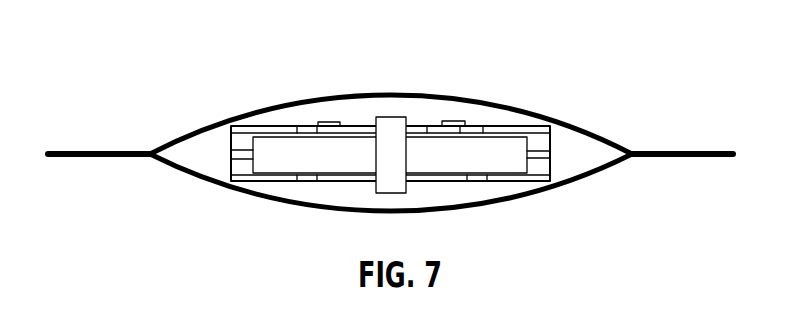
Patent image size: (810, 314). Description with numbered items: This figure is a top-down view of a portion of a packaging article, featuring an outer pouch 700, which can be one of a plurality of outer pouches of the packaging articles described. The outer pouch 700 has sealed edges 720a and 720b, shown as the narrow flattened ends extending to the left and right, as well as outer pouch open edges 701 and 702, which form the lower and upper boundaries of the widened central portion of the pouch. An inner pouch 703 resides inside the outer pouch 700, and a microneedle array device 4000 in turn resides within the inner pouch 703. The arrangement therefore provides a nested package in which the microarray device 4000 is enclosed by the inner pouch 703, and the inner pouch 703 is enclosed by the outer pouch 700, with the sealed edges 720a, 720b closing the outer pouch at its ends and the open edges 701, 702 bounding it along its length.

The outer pouch 700 is at (131, 62).
The outer pouch open edge 701 is at (197, 180).
The outer pouch open edge 702 is at (392, 93).
The inner pouch 703 is at (475, 122).
The microneedle array device 4000 is at (518, 143).
The sealed edge 720a is at (96, 152).
The sealed edge 720b is at (688, 150).